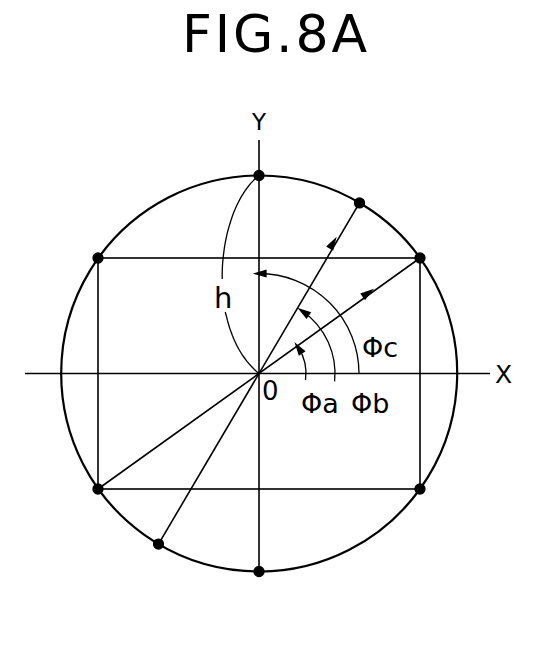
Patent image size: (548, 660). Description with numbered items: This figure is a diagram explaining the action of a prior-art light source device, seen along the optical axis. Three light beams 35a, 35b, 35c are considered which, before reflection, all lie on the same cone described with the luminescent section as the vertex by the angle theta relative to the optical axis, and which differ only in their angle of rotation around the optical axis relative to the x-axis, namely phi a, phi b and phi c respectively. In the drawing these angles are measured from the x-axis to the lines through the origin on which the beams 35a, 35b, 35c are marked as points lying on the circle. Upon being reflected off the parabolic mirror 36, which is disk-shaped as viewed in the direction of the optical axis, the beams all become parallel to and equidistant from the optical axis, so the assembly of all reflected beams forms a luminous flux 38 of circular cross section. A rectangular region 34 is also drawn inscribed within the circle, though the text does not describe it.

The rectangular image area 34 is at (420, 322).
The light beam 35a is at (390, 270).
The light beam 35b is at (348, 226).
The light beam 35c is at (263, 210).
The parabolic mirror 36 is at (333, 532).
The luminous flux 38 is at (397, 510).